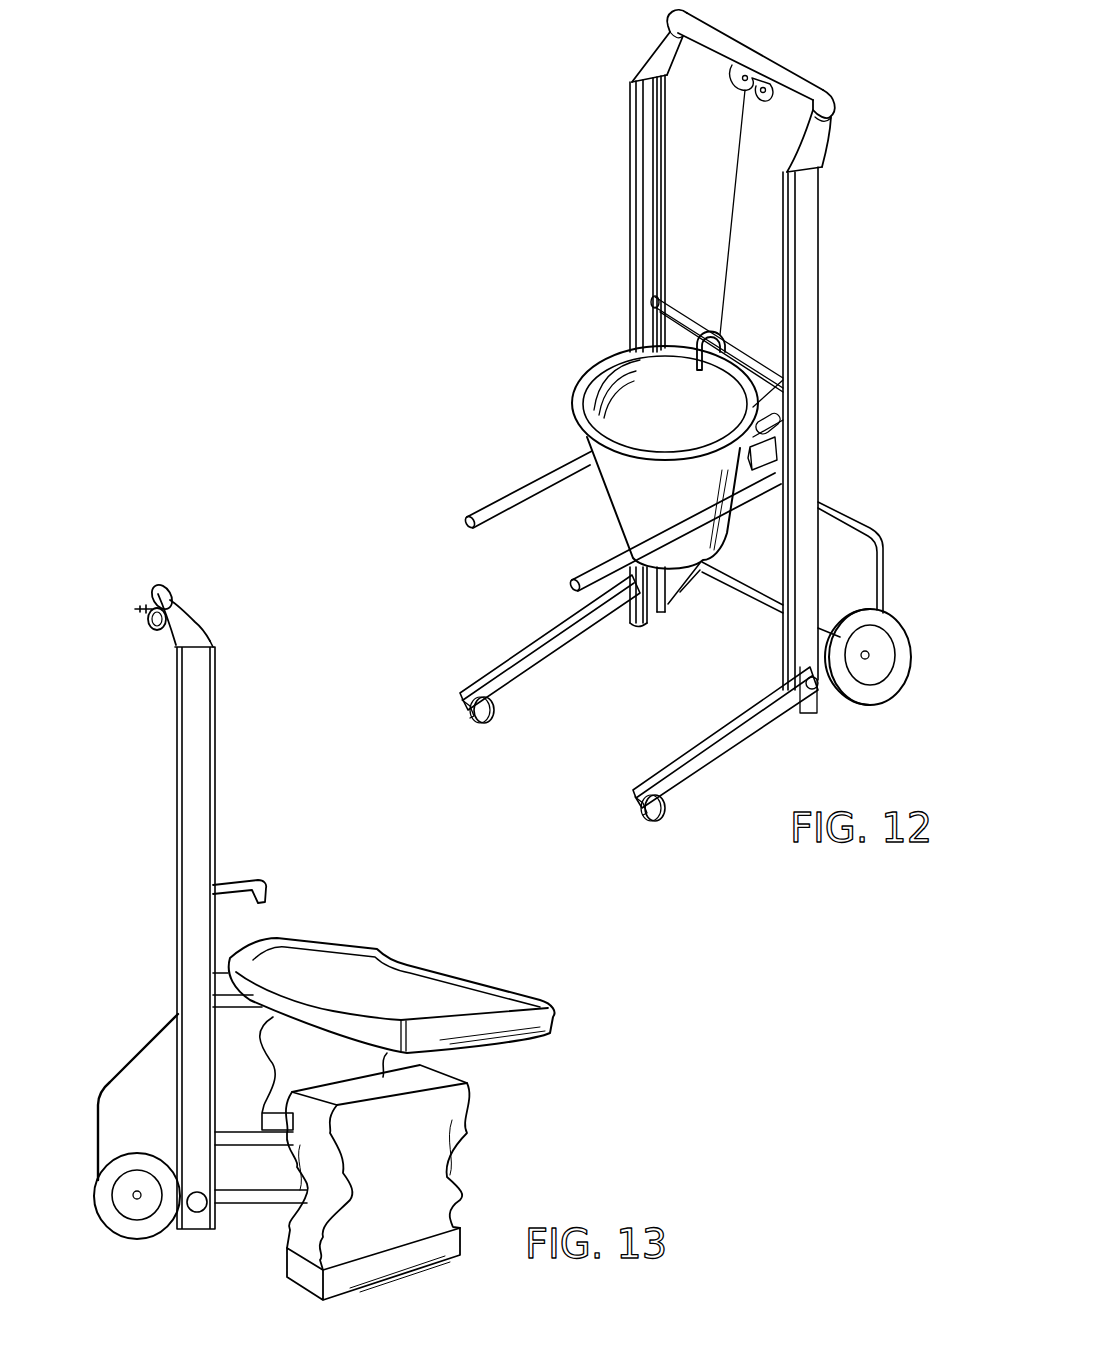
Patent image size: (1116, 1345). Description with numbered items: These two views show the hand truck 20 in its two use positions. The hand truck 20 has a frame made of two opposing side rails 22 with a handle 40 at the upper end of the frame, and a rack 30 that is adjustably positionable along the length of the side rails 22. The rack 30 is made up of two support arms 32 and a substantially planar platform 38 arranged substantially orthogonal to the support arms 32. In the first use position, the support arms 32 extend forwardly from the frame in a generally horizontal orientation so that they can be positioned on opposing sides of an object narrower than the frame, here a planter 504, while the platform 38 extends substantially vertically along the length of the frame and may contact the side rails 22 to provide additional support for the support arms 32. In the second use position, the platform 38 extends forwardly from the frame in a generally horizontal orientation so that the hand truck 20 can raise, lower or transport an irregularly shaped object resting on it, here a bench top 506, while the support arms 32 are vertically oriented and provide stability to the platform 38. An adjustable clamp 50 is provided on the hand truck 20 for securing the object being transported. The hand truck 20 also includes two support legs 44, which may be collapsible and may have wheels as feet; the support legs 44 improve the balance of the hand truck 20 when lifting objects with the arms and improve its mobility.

In FIG. 12, the hand truck 20 is at (582, 118).
In FIG. 13, the hand truck 20 is at (98, 622).
In FIG. 12, the side rails 22 is at (803, 300).
In FIG. 12, the rack 30 is at (838, 432).
In FIG. 12, the support arms 32 is at (515, 490).
In FIG. 13, the platform 38 is at (220, 985).
In FIG. 12, the handle 40 is at (790, 72).
In FIG. 13, the support legs 44 is at (277, 1193).
In FIG. 12, the adjustable clamp 50 is at (718, 345).
In FIG. 13, the adjustable clamp 50 is at (243, 882).
In FIG. 12, the planter 504 is at (595, 368).
In FIG. 13, the bench top 506 is at (448, 960).